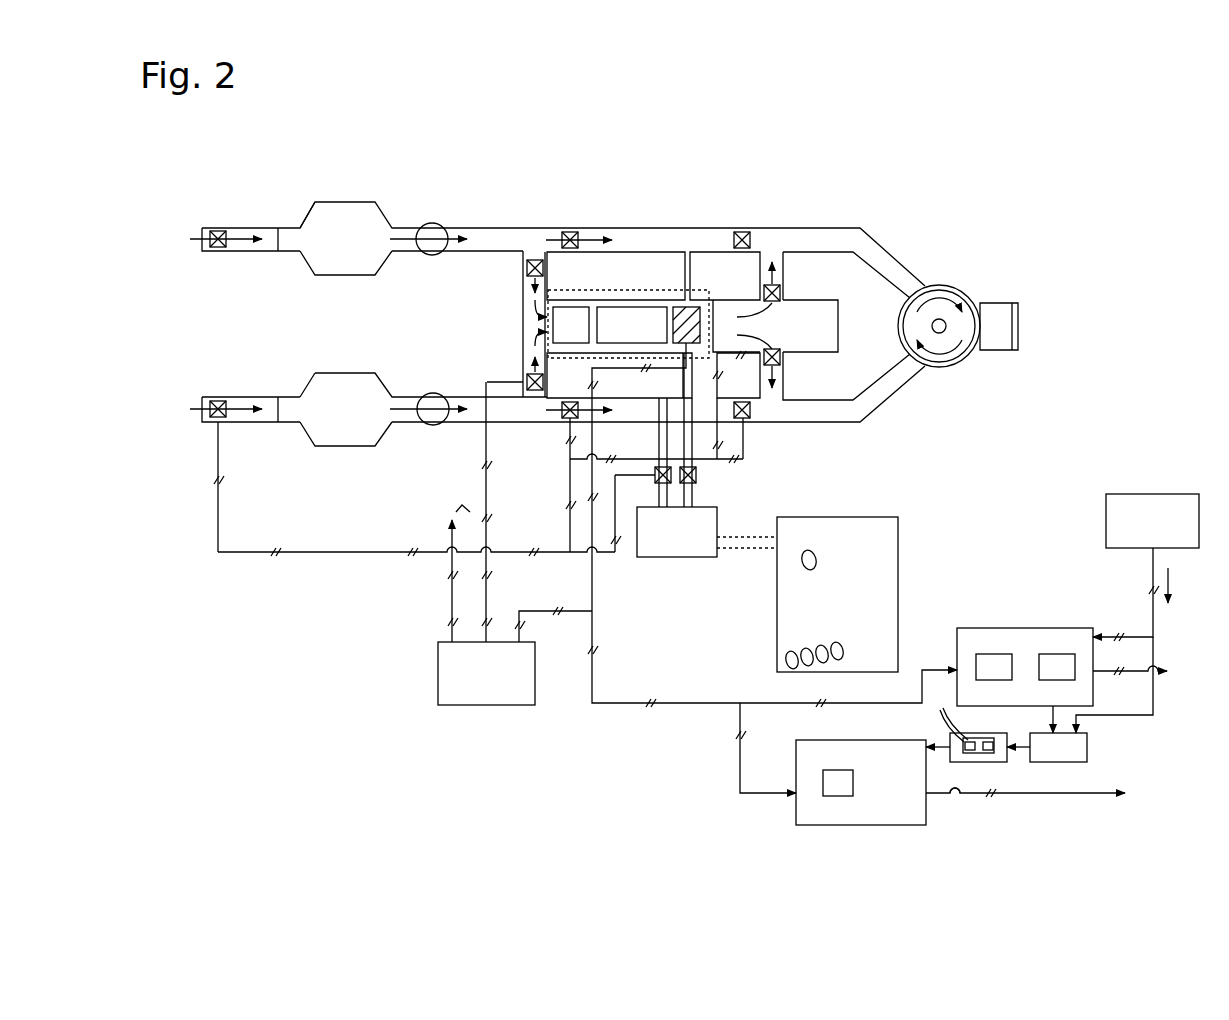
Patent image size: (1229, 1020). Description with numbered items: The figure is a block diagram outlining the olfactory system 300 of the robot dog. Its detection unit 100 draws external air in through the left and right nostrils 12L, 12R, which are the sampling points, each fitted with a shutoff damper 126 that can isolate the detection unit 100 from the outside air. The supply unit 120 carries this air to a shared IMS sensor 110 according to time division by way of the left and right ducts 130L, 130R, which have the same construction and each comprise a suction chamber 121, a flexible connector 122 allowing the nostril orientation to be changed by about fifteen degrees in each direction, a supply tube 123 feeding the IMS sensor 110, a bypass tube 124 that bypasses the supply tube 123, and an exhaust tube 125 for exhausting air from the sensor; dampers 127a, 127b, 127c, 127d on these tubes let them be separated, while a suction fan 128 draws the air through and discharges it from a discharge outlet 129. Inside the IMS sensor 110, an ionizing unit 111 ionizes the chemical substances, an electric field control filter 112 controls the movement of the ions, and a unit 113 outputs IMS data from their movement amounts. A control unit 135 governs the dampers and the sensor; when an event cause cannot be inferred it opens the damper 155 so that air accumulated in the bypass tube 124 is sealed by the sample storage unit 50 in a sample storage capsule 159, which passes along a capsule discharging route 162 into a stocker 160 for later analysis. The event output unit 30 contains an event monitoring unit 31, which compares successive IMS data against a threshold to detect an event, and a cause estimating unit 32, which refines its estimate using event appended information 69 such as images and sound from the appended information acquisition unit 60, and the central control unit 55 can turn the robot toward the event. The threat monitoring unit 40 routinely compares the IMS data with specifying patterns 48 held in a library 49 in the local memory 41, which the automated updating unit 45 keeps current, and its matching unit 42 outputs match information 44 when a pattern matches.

The detection unit 100 is at (545, 167).
The right nostril 12R is at (204, 232).
The left nostril 12L is at (204, 400).
The shutoff damper 126 is at (222, 231).
The right duct 130R is at (345, 200).
The left duct 130L is at (342, 465).
The suction chamber 121 is at (333, 276).
The flexible connector 122 is at (433, 256).
The supply tube 123 is at (524, 286).
The bypass tube 124 is at (617, 234).
The IMS sensor 110 is at (641, 290).
The ionizing unit 111 is at (576, 312).
The electric field control filter 112 is at (632, 312).
The output unit 113 is at (680, 312).
The exhaust tube 125 is at (780, 264).
The damper 127a is at (535, 392).
The damper 127b is at (567, 420).
The damper 127c is at (750, 420).
The damper 127d is at (781, 361).
The suction fan 128 is at (963, 343).
The discharge outlet 129 is at (1003, 336).
The supply unit 120 is at (420, 468).
The damper 155 is at (700, 478).
The sample storage unit 50 is at (675, 553).
The capsule discharging route 162 is at (750, 548).
The stocker 160 is at (789, 635).
The sample storage capsule 159 is at (818, 557).
The olfactory system 300 is at (203, 672).
The control unit 135 is at (470, 706).
The event output unit 30 is at (1080, 628).
The event monitoring unit 31 is at (992, 654).
The cause estimating unit 32 is at (1052, 654).
The appended information acquisition unit 60 is at (1150, 494).
The event appended information 69 is at (1175, 586).
The central control unit 55 is at (1065, 744).
The automated updating unit 45 is at (1090, 748).
The local memory 41 is at (990, 762).
The library 49 is at (990, 733).
The specifying patterns 48 is at (959, 720).
The threat monitoring unit 40 is at (797, 760).
The matching unit 42 is at (840, 770).
The match information 44 is at (957, 800).